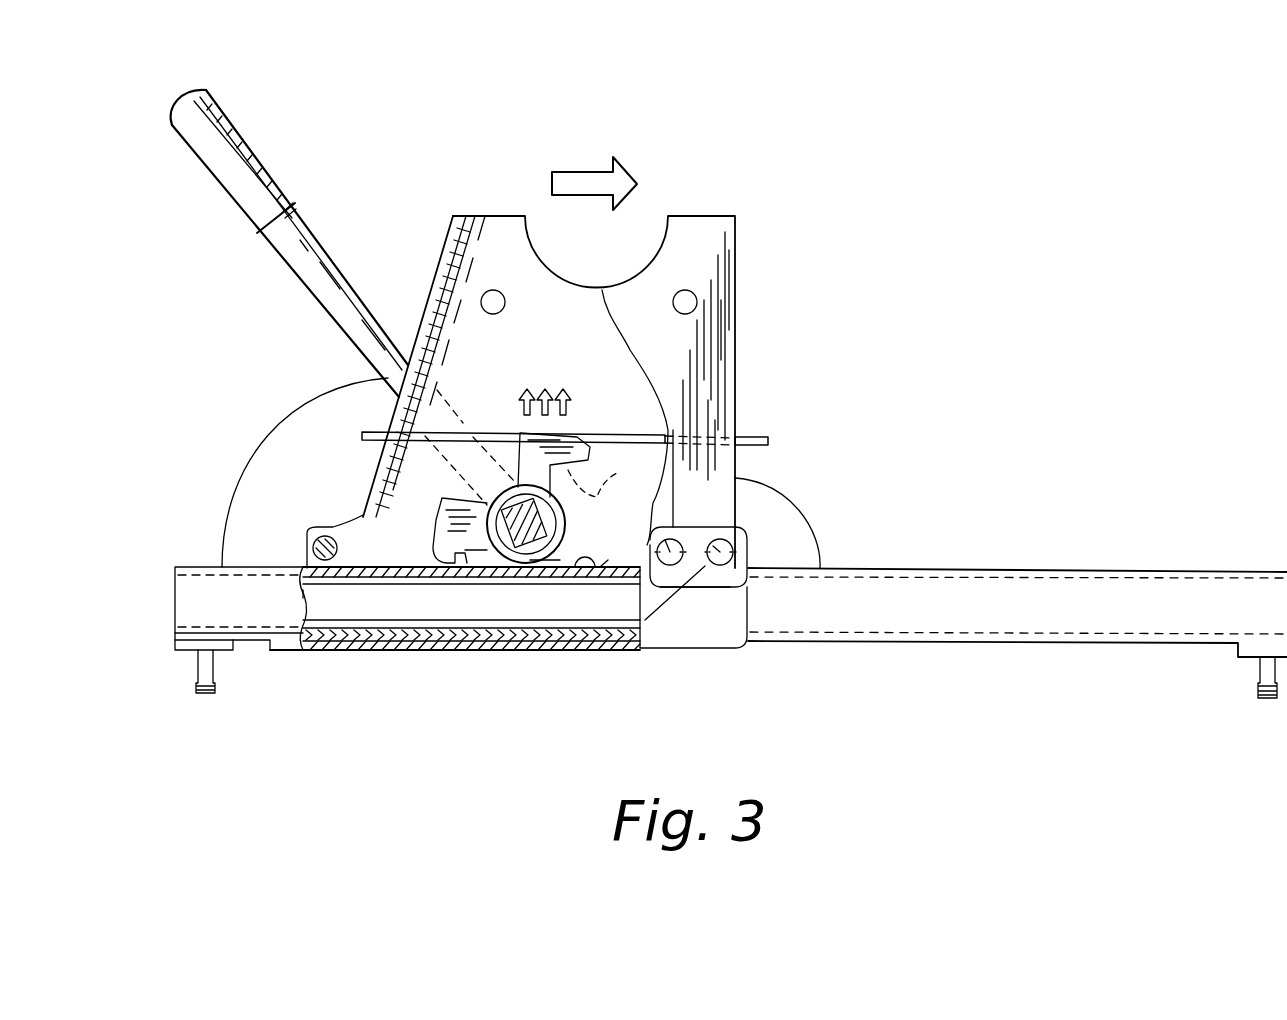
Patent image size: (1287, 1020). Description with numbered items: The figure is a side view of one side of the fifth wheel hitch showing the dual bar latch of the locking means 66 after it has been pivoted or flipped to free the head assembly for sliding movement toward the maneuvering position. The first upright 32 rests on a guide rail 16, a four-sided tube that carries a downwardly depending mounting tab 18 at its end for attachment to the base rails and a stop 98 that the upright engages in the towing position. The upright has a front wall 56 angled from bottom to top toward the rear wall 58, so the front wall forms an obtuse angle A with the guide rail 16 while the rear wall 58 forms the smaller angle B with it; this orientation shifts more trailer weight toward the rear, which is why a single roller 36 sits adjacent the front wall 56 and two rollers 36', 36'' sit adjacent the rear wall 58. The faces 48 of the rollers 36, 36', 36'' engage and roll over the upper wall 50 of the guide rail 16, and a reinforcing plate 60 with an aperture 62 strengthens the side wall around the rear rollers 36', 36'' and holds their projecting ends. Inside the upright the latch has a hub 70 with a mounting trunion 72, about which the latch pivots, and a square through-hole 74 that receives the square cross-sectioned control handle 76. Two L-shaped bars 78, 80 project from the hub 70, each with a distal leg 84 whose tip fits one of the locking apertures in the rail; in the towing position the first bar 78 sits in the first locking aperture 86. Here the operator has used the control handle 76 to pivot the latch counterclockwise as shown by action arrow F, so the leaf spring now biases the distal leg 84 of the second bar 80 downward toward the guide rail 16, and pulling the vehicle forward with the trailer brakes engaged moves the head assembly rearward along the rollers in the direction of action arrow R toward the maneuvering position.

The guide rail 16 is at (731, 611).
The mounting tab 18 is at (210, 668).
The first upright 32 is at (616, 344).
The roller 36 is at (315, 509).
The roller 36' is at (737, 527).
The roller 36'' is at (643, 624).
The roller face 48 is at (305, 588).
The upper wall 50 is at (567, 567).
The first end or front wall 56 is at (430, 287).
The second end or rear wall 58 is at (737, 384).
The reinforcing plate 60 is at (710, 580).
The aperture 62 is at (745, 582).
The locking means 66 is at (793, 440).
The hub 70 is at (575, 568).
The mounting trunion 72 is at (505, 555).
The square through-hole 74 is at (560, 567).
The control handle 76 is at (335, 322).
The first bar 78 is at (597, 447).
The second bar 80 is at (427, 525).
The distal leg 84 is at (437, 512).
The first locking aperture 86 is at (606, 567).
The stop 98 is at (287, 643).
The obtuse angle A is at (267, 430).
The angle B is at (808, 512).
The action arrow F is at (614, 474).
The action arrow R is at (587, 183).